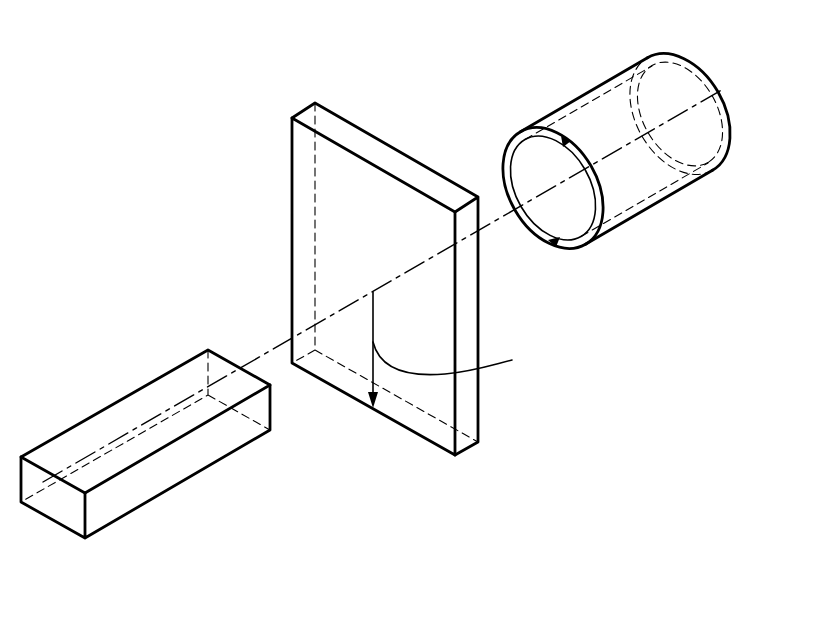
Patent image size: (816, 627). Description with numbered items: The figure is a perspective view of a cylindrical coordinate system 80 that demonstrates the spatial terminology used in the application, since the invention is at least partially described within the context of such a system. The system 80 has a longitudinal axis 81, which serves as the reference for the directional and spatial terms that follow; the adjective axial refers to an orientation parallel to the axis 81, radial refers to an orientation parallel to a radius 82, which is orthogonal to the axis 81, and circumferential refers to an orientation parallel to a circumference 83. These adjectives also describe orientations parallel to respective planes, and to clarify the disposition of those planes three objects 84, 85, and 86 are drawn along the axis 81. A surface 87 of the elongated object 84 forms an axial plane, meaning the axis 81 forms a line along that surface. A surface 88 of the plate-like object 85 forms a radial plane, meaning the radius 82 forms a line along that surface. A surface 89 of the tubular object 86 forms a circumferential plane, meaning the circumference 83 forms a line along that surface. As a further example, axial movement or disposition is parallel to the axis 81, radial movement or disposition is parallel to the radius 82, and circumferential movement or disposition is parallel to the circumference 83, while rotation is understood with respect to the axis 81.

The cylindrical coordinate system 80 is at (236, 148).
The longitudinal axis 81 is at (717, 87).
The radius 82 is at (516, 357).
The circumference 83 is at (505, 148).
The object 84 is at (145, 473).
The object 85 is at (385, 300).
The object 86 is at (582, 158).
The surface 87 is at (107, 427).
The surface 88 is at (305, 238).
The surface 89 is at (583, 89).